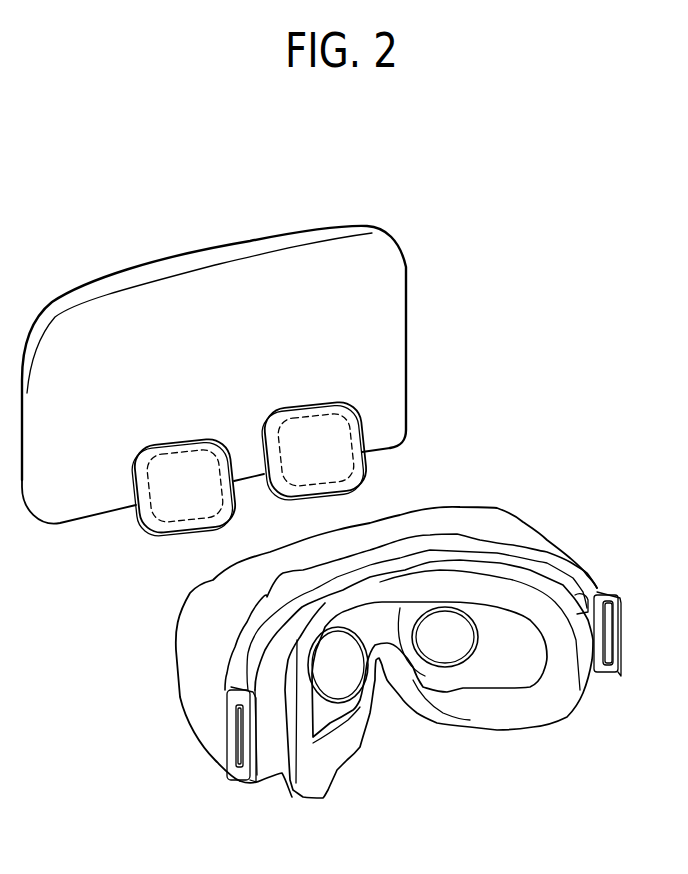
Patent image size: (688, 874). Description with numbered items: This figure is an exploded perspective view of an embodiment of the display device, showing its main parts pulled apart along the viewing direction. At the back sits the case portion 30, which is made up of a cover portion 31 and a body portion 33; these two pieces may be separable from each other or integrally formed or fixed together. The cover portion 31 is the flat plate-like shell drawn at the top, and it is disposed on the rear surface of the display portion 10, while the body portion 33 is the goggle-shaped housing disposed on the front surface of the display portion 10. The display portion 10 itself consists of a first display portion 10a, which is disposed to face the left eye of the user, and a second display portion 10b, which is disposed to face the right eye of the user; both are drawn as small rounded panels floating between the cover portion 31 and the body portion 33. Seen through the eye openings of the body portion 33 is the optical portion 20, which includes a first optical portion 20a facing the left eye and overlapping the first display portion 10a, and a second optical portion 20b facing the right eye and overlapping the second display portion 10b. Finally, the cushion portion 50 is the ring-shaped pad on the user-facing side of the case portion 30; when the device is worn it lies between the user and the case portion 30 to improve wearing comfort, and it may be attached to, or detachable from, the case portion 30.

The display portion 10 is at (207, 508).
The first display portion 10a is at (142, 512).
The second display portion 10b is at (283, 498).
The optical portion 20 is at (393, 728).
The first optical portion 20a is at (347, 677).
The second optical portion 20b is at (438, 657).
The case portion 30 is at (321, 511).
The cover portion 31 is at (390, 372).
The body portion 33 is at (398, 623).
The cushion portion 50 is at (540, 720).